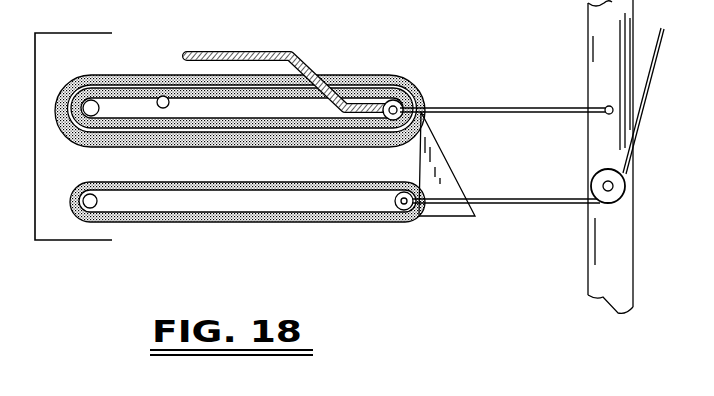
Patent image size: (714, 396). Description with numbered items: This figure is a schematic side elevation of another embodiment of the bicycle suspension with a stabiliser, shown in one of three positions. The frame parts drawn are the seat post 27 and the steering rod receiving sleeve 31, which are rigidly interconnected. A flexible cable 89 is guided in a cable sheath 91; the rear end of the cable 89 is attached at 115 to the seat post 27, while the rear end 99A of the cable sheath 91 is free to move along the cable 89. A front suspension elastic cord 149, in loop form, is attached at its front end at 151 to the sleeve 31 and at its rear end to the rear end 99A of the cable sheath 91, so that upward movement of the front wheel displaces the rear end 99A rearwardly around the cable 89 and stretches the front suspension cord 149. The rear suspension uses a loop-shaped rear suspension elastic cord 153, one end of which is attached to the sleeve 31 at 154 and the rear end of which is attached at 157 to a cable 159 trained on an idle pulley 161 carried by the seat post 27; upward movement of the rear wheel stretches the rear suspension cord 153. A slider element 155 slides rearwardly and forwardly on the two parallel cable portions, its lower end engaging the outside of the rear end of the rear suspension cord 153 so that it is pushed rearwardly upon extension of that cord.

The seat post 27 is at (624, 257).
The steering rod receiving sleeve 31 is at (57, 226).
The flexible cable 89 is at (515, 108).
The cable sheath 91 is at (298, 52).
The rear end of cable sheath 99A is at (428, 53).
The attachment point of cable rear end 115 is at (607, 106).
The front suspension elastic cord 149 is at (162, 96).
The attachment point of front suspension cord 151 is at (90, 100).
The rear suspension elastic cord 153 is at (291, 182).
The attachment point of rear suspension cord 154 is at (91, 194).
The slider element 155 is at (450, 166).
The attachment point of cord rear end 157 is at (406, 191).
The cable 159 is at (129, 75).
The idle pulley 161 is at (598, 172).